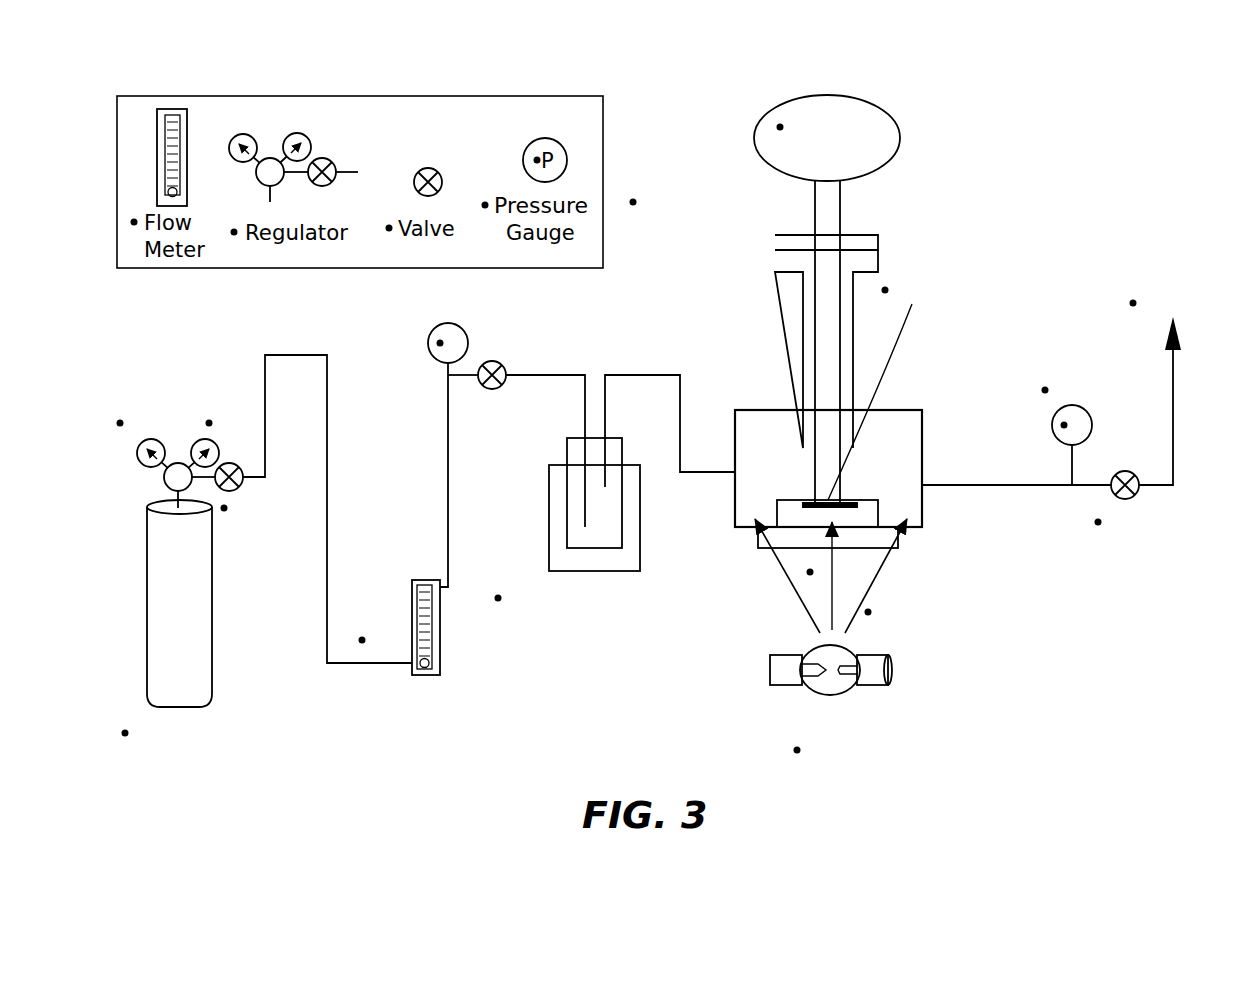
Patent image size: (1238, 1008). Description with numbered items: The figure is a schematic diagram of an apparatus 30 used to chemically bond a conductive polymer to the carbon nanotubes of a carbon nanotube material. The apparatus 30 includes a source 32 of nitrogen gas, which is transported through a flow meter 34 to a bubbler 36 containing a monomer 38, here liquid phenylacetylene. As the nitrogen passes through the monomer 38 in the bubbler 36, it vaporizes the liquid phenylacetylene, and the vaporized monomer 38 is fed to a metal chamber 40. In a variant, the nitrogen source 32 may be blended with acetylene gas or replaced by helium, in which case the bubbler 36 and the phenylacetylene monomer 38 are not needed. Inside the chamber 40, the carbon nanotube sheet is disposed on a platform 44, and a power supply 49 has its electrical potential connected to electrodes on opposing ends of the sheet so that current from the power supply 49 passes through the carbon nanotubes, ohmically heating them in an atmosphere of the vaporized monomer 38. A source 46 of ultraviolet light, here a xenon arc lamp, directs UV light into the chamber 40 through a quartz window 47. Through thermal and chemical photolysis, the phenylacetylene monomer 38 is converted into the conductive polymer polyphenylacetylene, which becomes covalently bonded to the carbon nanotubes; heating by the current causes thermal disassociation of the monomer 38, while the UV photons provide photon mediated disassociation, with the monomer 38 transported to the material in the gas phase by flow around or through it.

The apparatus 30 is at (1078, 228).
The source of nitrogen gas 32 is at (189, 642).
The flow meter 34 is at (411, 607).
The bubbler 36 is at (549, 528).
The monomer 38 is at (614, 520).
The metal chamber 40 is at (766, 408).
The platform 44 is at (863, 500).
The source of ultraviolet light 46 is at (871, 688).
The quartz window 47 is at (792, 543).
The power supply 49 is at (896, 122).